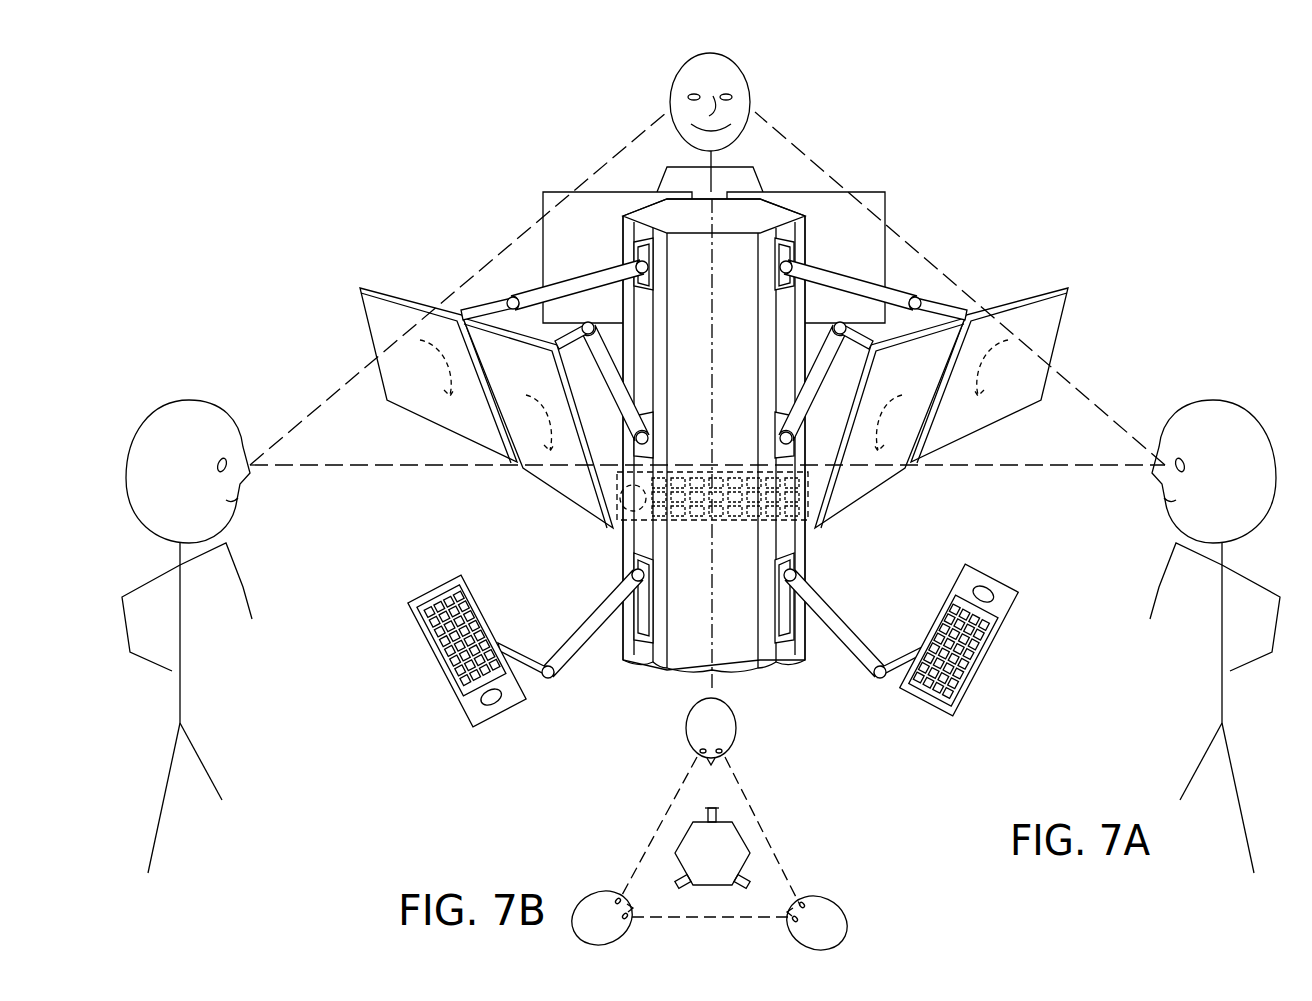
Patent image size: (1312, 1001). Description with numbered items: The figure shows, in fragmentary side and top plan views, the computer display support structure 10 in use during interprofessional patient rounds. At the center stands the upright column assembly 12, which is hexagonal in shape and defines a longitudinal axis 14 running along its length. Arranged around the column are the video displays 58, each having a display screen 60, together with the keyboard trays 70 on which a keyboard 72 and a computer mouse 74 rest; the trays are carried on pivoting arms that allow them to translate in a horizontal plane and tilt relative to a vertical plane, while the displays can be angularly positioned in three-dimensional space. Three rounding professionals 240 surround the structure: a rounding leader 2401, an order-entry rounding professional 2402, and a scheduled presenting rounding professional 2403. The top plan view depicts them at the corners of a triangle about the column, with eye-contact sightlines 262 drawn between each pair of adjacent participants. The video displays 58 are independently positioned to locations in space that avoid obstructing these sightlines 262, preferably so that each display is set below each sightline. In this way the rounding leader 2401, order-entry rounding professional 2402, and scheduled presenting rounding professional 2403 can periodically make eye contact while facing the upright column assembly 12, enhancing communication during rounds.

In FIG. 7A, the computer display support structure 10 is at (848, 108).
In FIG. 7A, the upright column assembly 12 is at (748, 327).
In FIG. 7B, the upright column assembly 12 is at (725, 867).
In FIG. 7A, the longitudinal axis 14 is at (710, 340).
In FIG. 7A, the video display 58 is at (565, 218).
In FIG. 7A, the display screen 60 is at (608, 192).
In FIG. 7A, the keyboard tray 70 is at (450, 683).
In FIG. 7A, the keyboard 72 is at (440, 640).
In FIG. 7A, the computer mouse 74 is at (485, 703).
In FIG. 7A, the rounding professionals 240 is at (701, 456).
In FIG. 7B, the rounding professionals 240 is at (741, 829).
In FIG. 7A, the rounding leader 2401 is at (170, 408).
In FIG. 7B, the rounding leader 2401 is at (598, 893).
In FIG. 7A, the order-entry rounding professional 2402 is at (737, 68).
In FIG. 7B, the order-entry rounding professional 2402 is at (735, 735).
In FIG. 7A, the scheduled presenting rounding professional 2403 is at (1205, 405).
In FIG. 7B, the scheduled presenting rounding professional 2403 is at (845, 915).
In FIG. 7A, the eye-contact sightline 262 is at (335, 372).
In FIG. 7B, the eye-contact sightline 262 is at (660, 822).